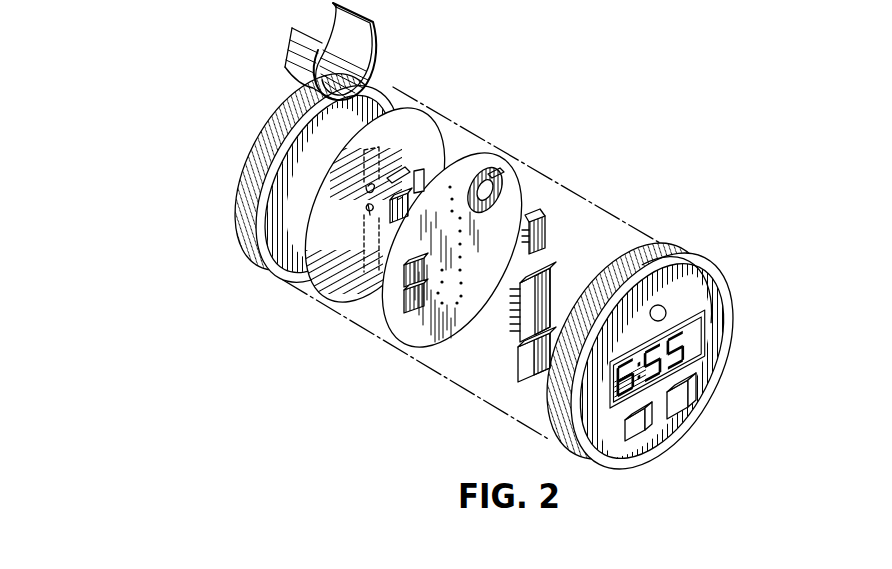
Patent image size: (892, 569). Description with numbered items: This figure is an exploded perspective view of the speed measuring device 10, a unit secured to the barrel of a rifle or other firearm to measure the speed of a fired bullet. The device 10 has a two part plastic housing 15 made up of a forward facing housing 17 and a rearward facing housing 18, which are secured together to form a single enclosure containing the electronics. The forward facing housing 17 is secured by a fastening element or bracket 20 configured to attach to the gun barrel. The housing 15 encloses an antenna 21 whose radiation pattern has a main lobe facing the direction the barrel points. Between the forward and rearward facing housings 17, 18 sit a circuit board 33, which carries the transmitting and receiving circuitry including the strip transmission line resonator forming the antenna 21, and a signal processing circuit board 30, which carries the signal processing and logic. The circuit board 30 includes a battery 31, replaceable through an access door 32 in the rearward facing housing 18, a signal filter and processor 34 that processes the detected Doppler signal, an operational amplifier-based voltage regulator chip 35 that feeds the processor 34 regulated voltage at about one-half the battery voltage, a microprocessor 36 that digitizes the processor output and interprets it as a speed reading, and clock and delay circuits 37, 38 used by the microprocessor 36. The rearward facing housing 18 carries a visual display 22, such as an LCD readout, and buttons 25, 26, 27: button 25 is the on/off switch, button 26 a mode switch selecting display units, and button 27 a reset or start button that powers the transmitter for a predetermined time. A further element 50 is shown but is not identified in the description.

The speed measuring device 10 is at (308, 350).
The two part plastic housing 15 is at (242, 200).
The forward facing housing 17 is at (247, 253).
The rearward facing housing 18 is at (675, 254).
The fastening element or bracket 20 is at (285, 64).
The antenna 21 is at (366, 201).
The visual display 22 is at (693, 347).
The button 25 is at (667, 309).
The second button 26 is at (646, 430).
The third button 27 is at (690, 402).
The signal processing circuit board 30 is at (517, 187).
The battery 31 is at (489, 180).
The access door 32 is at (702, 282).
The circuit board 33 is at (417, 117).
The signal filter and processor 34 is at (517, 357).
The operational amplifier-based voltage regulator chip 35 is at (548, 227).
The microprocessor 36 is at (551, 276).
The clock circuit 37 is at (403, 282).
The delay circuit 38 is at (404, 314).
The slot / contact 50 is at (414, 161).